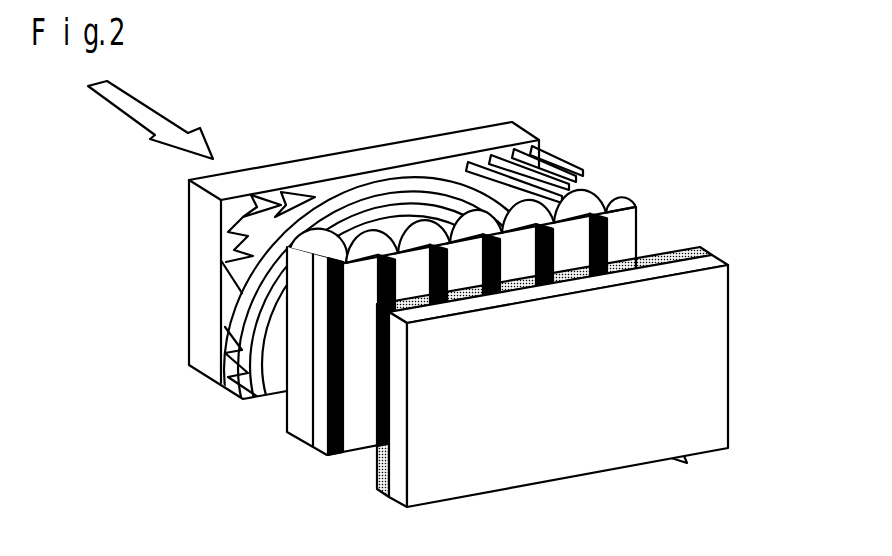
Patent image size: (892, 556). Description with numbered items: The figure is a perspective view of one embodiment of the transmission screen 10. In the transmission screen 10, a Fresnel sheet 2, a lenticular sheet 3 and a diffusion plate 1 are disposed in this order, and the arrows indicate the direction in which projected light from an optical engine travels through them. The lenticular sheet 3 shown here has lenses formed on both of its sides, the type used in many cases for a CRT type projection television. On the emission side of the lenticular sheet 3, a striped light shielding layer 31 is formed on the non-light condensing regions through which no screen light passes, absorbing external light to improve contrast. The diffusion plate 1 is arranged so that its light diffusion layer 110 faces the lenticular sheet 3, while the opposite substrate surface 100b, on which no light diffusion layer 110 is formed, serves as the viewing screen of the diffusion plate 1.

The diffusion plate 1 is at (536, 379).
The Fresnel sheet 2 is at (517, 126).
The lenticular sheet 3 is at (440, 305).
The transmission screen 10 is at (508, 309).
The striped light shielding layer 31 is at (330, 379).
The surface 100b is at (692, 361).
The light diffusion layer 110 is at (378, 459).